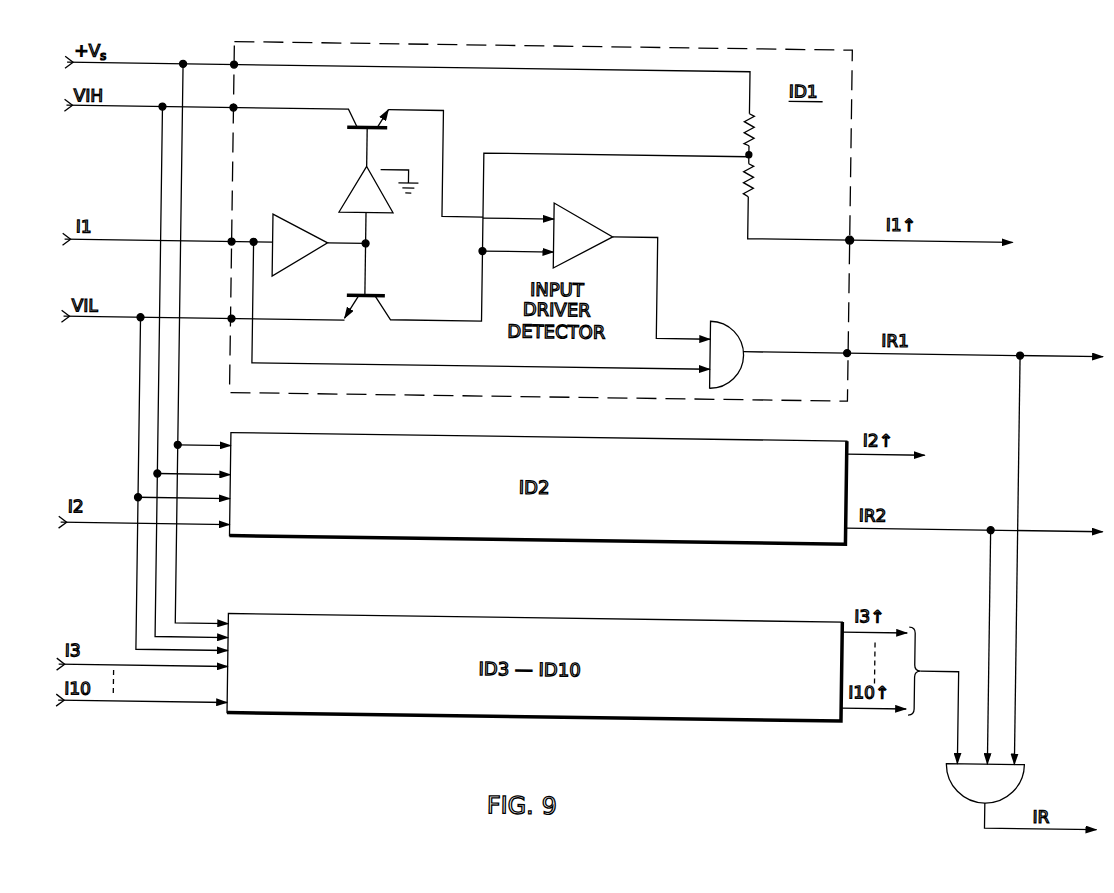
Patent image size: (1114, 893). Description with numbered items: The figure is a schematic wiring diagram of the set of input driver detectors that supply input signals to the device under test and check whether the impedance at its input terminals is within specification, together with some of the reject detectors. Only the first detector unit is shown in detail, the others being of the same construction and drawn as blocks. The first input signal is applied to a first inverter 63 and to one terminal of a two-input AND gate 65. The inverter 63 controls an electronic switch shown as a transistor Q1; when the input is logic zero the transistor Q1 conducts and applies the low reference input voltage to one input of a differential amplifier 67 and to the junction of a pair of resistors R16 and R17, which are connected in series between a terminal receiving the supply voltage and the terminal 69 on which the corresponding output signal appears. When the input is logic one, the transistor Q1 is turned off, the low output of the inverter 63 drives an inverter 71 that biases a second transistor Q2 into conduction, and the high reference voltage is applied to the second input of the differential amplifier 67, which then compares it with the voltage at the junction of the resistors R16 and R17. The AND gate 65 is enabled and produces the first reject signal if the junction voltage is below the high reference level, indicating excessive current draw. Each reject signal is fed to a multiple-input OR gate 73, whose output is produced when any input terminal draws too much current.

The first inverter 63 is at (288, 268).
The two-input AND gate 65 is at (742, 337).
The differential amplifier 67 is at (568, 214).
The terminal 69 is at (841, 240).
The inverter 71 is at (378, 217).
The multiple input OR gate 73 is at (957, 782).
The transistor Q1 is at (361, 308).
The transistor Q2 is at (368, 118).
The resistor R16 is at (731, 129).
The resistor R17 is at (730, 180).